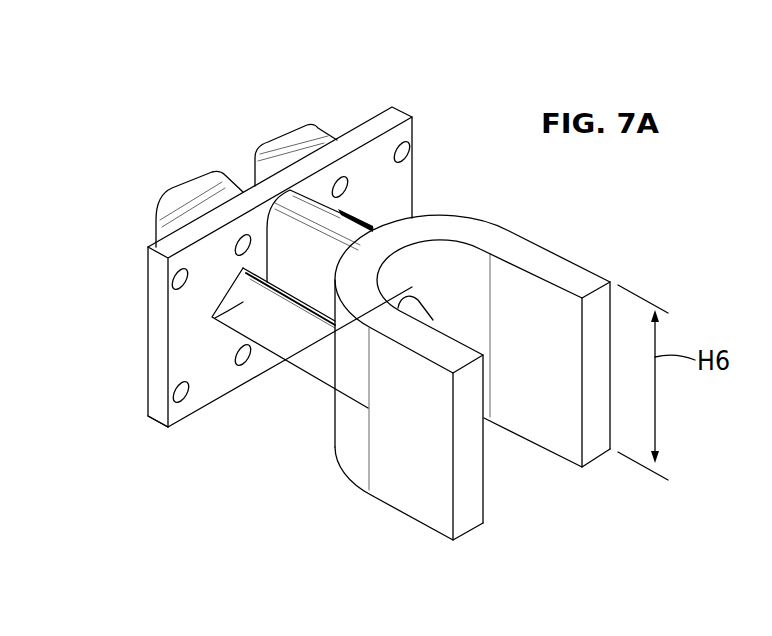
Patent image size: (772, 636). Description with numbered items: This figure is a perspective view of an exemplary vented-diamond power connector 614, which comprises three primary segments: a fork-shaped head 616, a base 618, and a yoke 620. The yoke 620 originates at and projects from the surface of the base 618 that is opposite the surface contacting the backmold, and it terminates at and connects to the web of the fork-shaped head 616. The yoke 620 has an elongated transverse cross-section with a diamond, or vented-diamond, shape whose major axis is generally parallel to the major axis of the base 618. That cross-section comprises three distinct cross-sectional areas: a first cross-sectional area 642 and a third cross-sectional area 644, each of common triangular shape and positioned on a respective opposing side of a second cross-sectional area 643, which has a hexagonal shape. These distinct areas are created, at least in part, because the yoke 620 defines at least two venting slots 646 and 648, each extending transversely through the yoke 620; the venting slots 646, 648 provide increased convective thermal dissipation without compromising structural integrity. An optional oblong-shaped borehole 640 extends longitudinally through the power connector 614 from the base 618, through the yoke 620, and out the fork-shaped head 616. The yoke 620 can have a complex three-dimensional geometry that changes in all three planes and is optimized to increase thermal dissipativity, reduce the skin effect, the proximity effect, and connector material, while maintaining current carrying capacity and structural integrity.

The power connector 614 is at (400, 325).
The fork-shaped head 616 is at (471, 390).
The base 618 is at (140, 398).
The yoke 620 is at (252, 275).
The oblong-shaped borehole 640 is at (420, 304).
The first cross-sectional area 642 is at (366, 222).
The second cross-sectional area 643 is at (307, 227).
The third cross-sectional area 644 is at (213, 317).
The venting slot 646 is at (329, 186).
The venting slot 648 is at (253, 241).